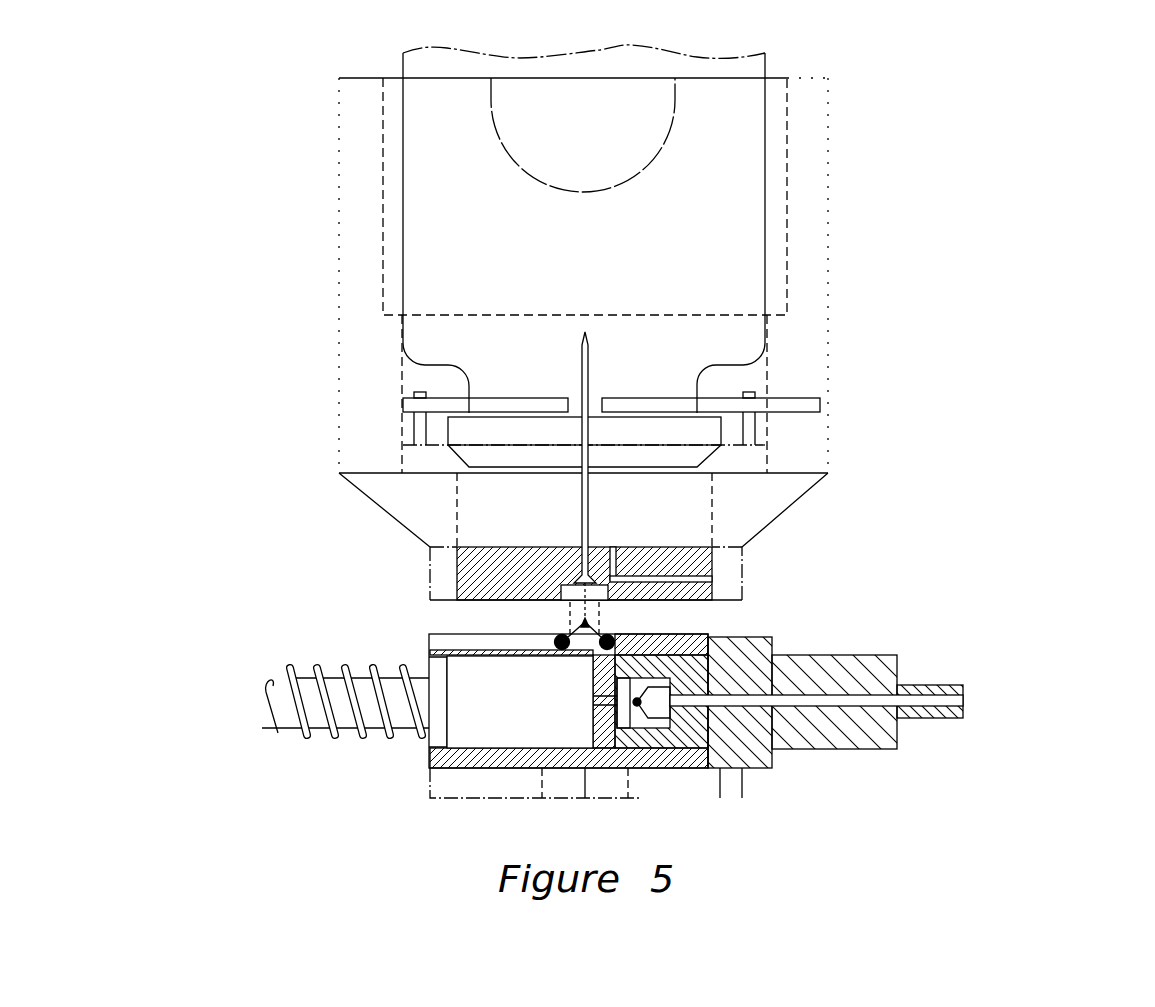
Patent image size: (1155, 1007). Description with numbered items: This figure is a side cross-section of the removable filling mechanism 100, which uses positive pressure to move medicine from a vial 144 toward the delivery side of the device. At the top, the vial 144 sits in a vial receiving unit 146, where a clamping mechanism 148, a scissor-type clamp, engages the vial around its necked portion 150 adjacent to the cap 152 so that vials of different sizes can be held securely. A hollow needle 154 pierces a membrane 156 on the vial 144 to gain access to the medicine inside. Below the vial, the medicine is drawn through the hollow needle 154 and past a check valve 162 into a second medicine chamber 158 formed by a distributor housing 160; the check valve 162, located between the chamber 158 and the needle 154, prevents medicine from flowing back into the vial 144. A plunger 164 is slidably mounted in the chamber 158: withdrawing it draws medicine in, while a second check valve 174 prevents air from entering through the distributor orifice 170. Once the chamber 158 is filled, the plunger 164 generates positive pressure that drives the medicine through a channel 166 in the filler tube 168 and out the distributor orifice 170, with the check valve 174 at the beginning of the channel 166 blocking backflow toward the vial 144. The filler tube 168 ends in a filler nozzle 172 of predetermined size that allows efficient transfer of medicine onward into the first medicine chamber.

The removable filling mechanism 100 is at (918, 253).
The vial 144 is at (750, 108).
The vial receiving unit 146 is at (812, 170).
The clamping mechanism 148 is at (725, 405).
The necked portion 150 is at (488, 388).
The cap 152 is at (460, 435).
The hollow needle 154 is at (580, 363).
The membrane 156 is at (565, 463).
The second medicine chamber 158 is at (505, 685).
The distributor housing 160 is at (442, 765).
The check valve 162 is at (578, 629).
The plunger 164 is at (440, 737).
The channel 166 is at (668, 703).
The filler tube 168 is at (840, 678).
The distributor orifice 170 is at (947, 704).
The filler nozzle 172 is at (923, 687).
The check valve 174 is at (660, 705).